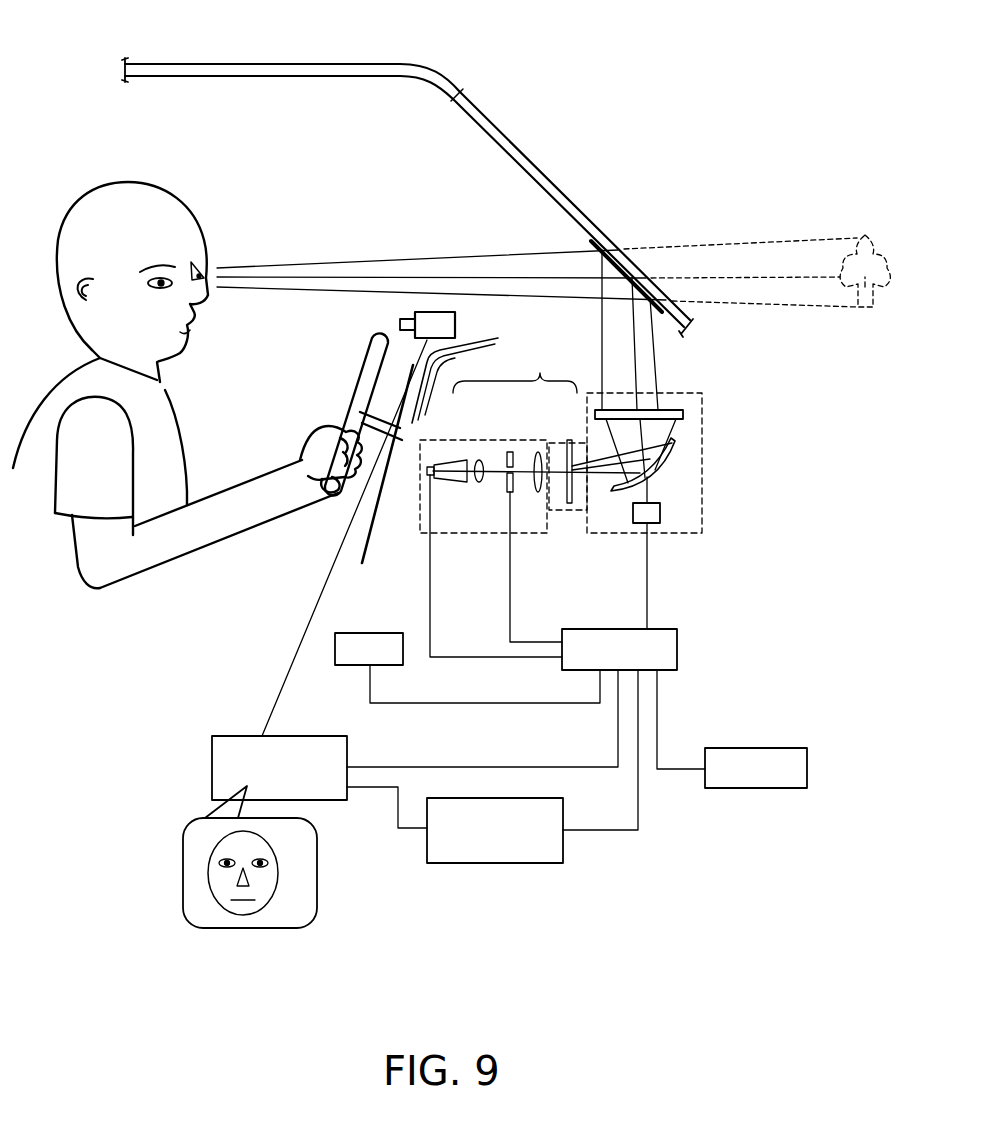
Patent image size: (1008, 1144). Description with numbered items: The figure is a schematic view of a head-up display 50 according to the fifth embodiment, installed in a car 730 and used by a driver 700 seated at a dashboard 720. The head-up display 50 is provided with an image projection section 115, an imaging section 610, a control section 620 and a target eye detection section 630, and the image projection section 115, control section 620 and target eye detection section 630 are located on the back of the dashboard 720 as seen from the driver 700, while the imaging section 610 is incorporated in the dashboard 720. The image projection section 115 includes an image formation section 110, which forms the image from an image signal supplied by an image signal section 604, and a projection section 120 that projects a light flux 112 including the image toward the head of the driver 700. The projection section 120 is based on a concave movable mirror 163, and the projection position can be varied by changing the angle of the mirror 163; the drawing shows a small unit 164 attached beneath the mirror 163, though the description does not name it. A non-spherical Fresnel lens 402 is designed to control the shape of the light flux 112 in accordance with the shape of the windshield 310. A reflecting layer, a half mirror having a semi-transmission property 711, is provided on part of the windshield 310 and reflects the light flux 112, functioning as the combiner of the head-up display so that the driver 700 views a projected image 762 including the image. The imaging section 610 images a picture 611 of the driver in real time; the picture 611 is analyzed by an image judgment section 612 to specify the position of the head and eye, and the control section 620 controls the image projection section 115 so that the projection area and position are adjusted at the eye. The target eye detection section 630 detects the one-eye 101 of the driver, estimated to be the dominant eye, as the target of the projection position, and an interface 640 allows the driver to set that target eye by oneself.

The head-up display 50 is at (676, 140).
The one-eye 101 is at (200, 274).
The image formation section 110 is at (568, 440).
The light flux 112 is at (338, 262).
The image projection section 115 is at (515, 369).
The projection section 120 is at (482, 440).
The concave movable mirror 163 is at (660, 466).
The mirror drive unit 164 is at (660, 512).
The windshield 310 is at (478, 108).
The non-spherical Fresnel lens 402 is at (683, 414).
The image signal section 604 is at (383, 633).
The imaging section 610 is at (430, 312).
The picture 611 is at (183, 874).
The image judgment section 612 is at (212, 757).
The control section 620 is at (677, 650).
The target eye detection section 630 is at (525, 863).
The interface 640 is at (771, 748).
The driver 700 is at (90, 205).
The semi-transmission property 711 is at (589, 240).
The dashboard 720 is at (397, 505).
The car 730 is at (190, 64).
The projected image 762 is at (865, 235).